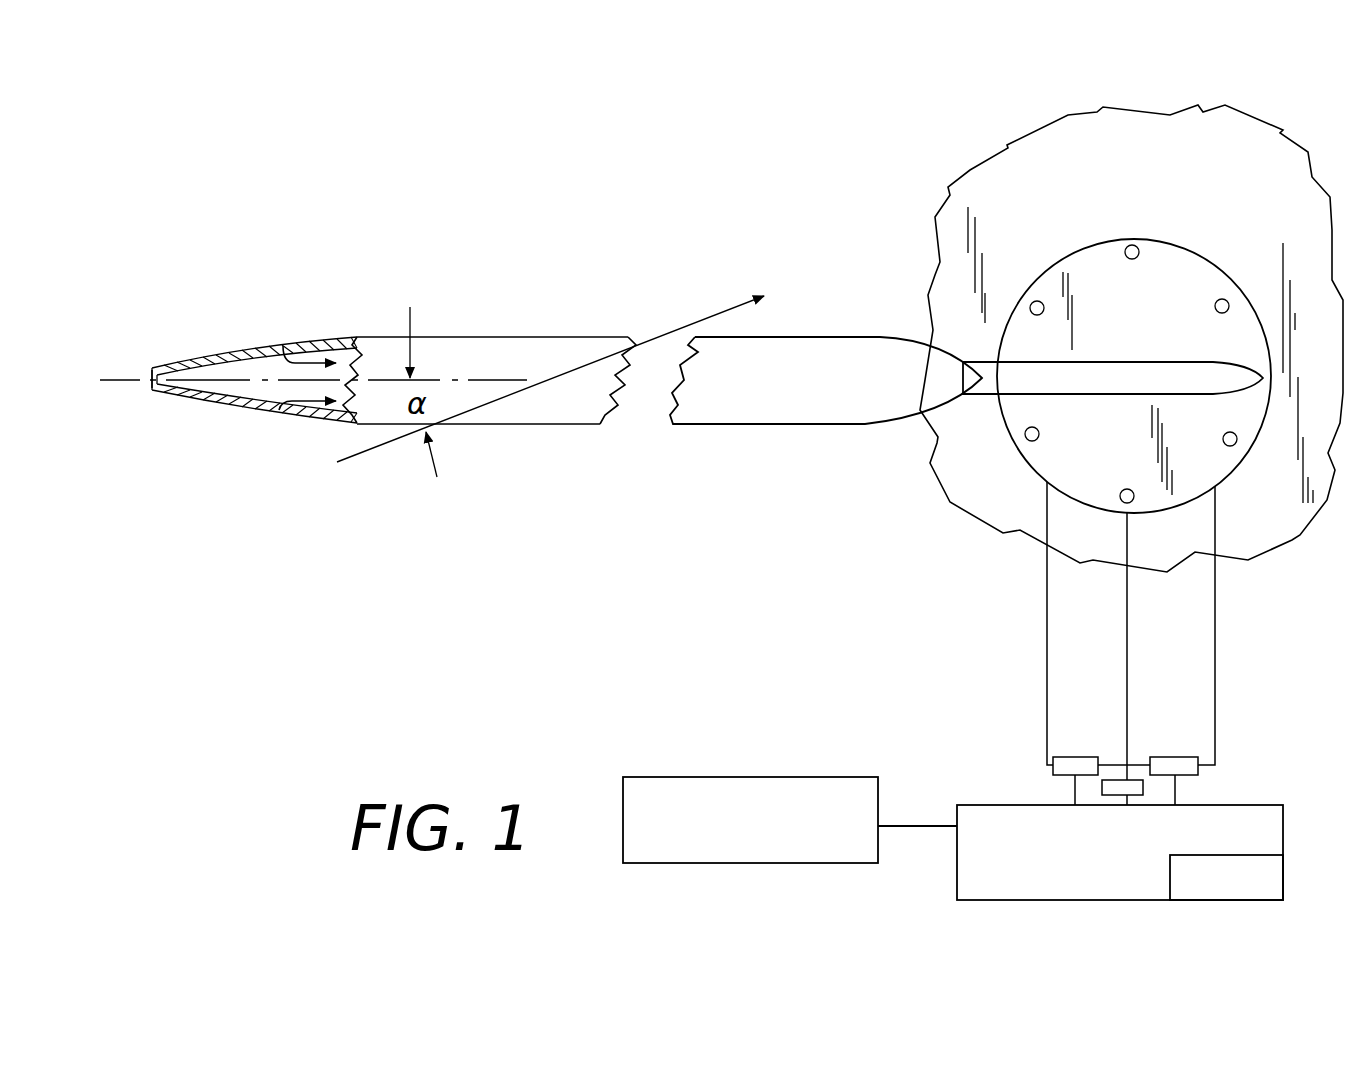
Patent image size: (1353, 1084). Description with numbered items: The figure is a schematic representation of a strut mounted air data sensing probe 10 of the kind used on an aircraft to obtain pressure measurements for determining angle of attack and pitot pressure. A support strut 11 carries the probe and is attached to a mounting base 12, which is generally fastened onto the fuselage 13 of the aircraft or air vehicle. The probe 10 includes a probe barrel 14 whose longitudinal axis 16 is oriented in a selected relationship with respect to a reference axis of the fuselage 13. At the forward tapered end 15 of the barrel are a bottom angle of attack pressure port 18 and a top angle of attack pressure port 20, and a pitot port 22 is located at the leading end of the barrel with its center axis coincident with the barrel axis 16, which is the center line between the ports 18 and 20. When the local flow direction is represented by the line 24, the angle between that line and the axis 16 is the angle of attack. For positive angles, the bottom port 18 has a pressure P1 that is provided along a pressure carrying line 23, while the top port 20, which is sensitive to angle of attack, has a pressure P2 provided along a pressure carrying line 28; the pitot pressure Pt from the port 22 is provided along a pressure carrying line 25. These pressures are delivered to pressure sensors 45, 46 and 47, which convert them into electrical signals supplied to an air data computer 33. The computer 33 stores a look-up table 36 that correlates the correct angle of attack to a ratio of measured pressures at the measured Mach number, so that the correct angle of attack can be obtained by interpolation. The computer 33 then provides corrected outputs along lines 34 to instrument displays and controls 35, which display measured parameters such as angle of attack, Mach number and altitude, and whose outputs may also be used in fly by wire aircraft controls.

The air data sensing probe 10 is at (800, 303).
The support strut 11 is at (1072, 368).
The mounting base 12 is at (1163, 257).
The fuselage 13 is at (1063, 135).
The probe barrel 14 is at (547, 407).
The forward tapered end 15 is at (215, 408).
The longitudinal axis 16 is at (517, 357).
The bottom angle of attack pressure port 18 is at (295, 418).
The top angle of attack pressure port 20 is at (252, 313).
The pitot port 22 is at (150, 382).
The pressure carrying line 23 is at (1127, 622).
The flow direction line 24 is at (662, 338).
The pressure carrying line 25 is at (1047, 617).
The pressure carrying line 28 is at (1215, 645).
The air data computer 33 is at (1220, 805).
The output lines 34 is at (903, 827).
The instrument displays and controls 35 is at (680, 777).
The look-up table 36 is at (1170, 868).
The pressure sensor 45 is at (1053, 768).
The pressure sensor 46 is at (1178, 757).
The pressure sensor 47 is at (1115, 765).